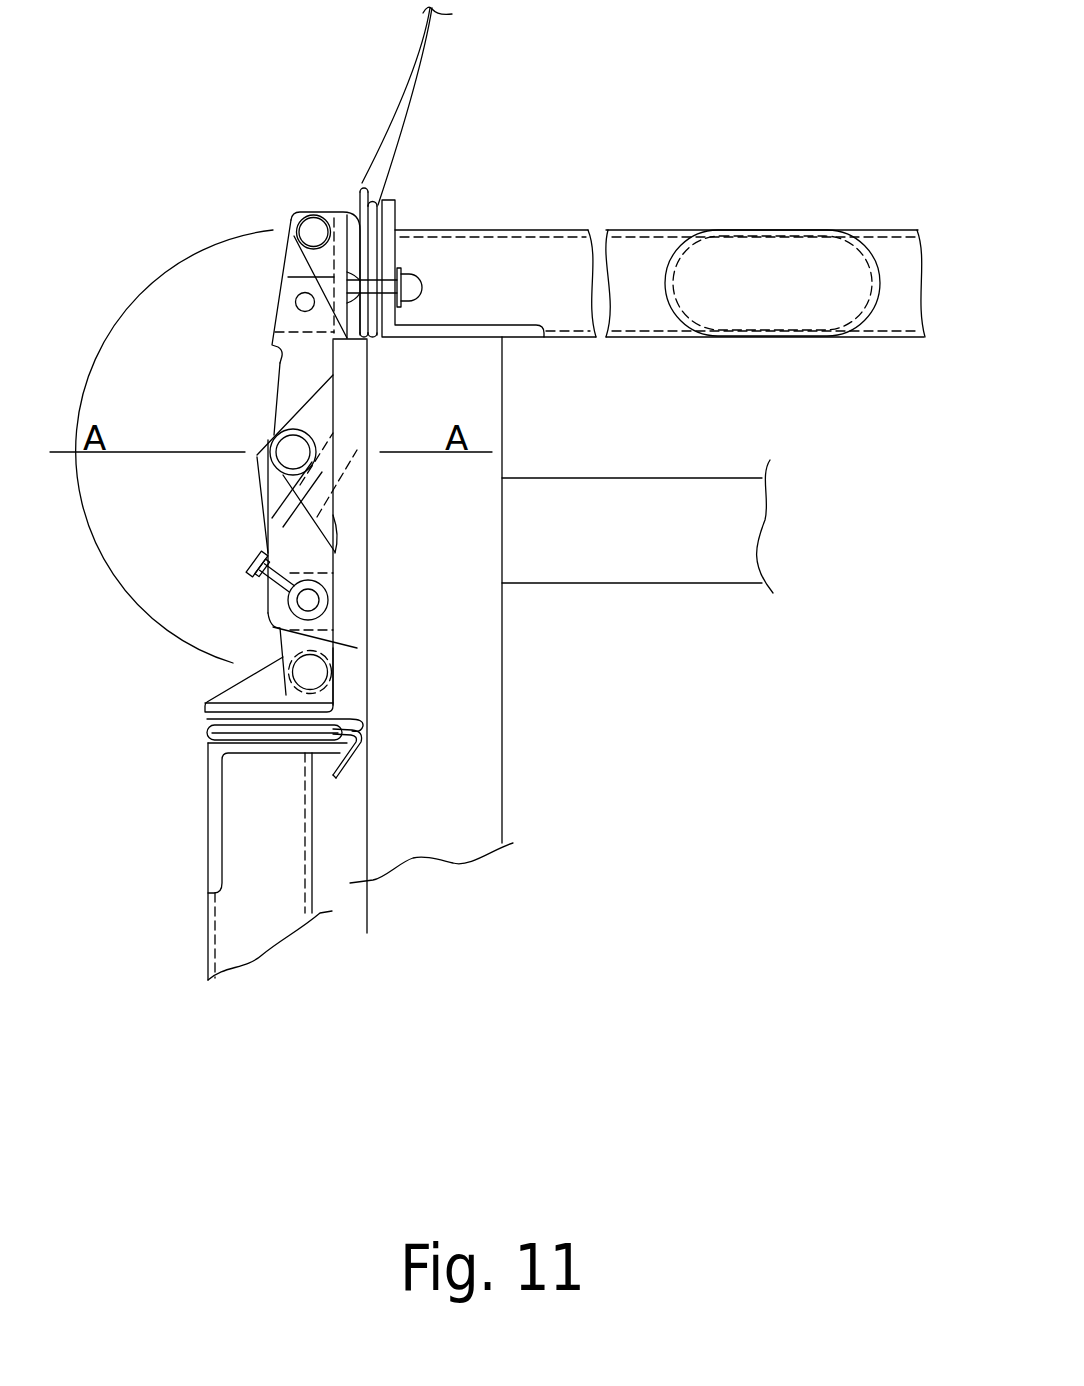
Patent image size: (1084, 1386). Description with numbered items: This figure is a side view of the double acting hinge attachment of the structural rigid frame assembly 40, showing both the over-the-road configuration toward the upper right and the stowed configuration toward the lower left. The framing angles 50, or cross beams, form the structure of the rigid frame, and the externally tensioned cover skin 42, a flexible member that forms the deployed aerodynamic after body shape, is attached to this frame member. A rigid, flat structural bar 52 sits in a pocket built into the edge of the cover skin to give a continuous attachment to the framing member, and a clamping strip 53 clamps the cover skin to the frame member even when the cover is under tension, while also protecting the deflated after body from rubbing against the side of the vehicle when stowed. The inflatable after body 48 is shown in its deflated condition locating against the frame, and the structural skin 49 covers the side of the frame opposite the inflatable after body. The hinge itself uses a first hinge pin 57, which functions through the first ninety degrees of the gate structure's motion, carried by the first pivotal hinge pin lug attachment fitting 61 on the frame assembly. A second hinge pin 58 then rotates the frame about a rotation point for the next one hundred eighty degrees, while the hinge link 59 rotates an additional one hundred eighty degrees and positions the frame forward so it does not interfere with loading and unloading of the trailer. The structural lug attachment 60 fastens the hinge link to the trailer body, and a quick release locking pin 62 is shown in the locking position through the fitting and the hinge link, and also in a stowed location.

The structural rigid frame assembly 40 is at (467, 230).
The externally tensioned cover skin 42 is at (430, 45).
The inflatable after body in deflated condition 48 is at (337, 779).
The structural skin 49 is at (685, 337).
The framing angles 50 is at (397, 217).
The rigid flat structural bar 52 is at (380, 202).
The clamping strip 53 is at (362, 182).
The first hinge pin 57 is at (296, 222).
The second hinge pin 58 is at (293, 452).
The hinge link 59 is at (278, 372).
The structural lug attachment 60 is at (303, 408).
The first pivotal hinge pin lug attachment fitting 61 is at (335, 205).
The quick release locking pin 62 is at (263, 553).